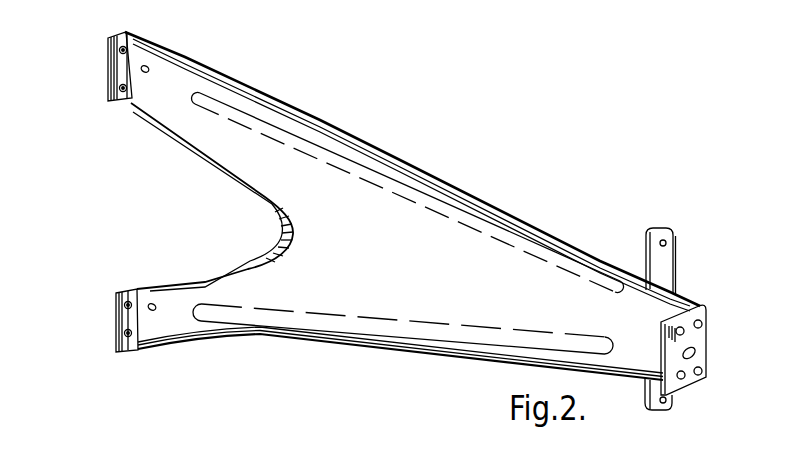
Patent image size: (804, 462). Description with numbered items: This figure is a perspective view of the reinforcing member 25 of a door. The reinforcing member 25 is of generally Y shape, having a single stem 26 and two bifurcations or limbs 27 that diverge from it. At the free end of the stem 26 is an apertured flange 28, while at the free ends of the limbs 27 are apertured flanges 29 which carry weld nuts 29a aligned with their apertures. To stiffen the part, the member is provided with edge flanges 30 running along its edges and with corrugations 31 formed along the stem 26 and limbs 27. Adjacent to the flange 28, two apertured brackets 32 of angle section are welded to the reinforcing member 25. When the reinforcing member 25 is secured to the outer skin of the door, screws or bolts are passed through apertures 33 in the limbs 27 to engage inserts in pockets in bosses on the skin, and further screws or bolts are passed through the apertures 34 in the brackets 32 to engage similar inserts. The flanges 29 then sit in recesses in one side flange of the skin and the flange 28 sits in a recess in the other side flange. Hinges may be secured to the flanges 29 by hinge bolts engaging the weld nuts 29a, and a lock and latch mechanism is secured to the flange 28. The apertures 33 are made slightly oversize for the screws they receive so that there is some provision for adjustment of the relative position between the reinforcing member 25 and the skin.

The reinforcing member 25 is at (434, 166).
The stem 26 is at (600, 313).
The limbs 27 is at (173, 73).
The apertured flange 28 is at (697, 339).
The apertured flanges 29 is at (112, 65).
The weld nuts 29a is at (117, 38).
The edge flanges 30 is at (447, 193).
The corrugations 31 is at (408, 202).
The apertured brackets 32 is at (672, 262).
The apertures 33 is at (147, 66).
The apertures 34 is at (682, 238).